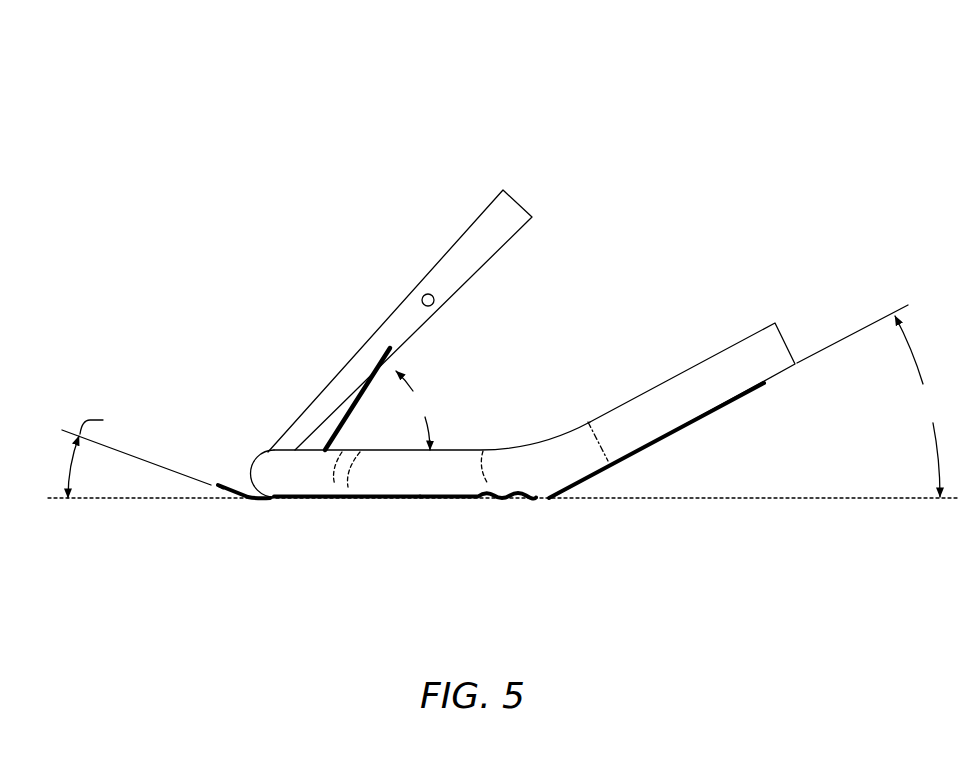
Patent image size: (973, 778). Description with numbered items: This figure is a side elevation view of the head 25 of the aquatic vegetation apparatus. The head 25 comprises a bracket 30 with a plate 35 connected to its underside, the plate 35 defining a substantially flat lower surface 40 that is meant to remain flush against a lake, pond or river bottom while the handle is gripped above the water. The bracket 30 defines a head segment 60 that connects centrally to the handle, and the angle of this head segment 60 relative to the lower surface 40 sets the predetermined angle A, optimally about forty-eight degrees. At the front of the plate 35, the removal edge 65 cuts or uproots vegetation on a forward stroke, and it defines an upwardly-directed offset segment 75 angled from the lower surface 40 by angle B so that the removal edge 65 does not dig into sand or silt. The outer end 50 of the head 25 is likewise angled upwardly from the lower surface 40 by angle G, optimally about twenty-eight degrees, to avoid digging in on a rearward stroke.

The head 25 is at (257, 177).
The bracket 30 is at (420, 473).
The plate 35 is at (445, 498).
The lower surface 40 is at (322, 498).
The outer end 50 is at (712, 297).
The head segment 60 is at (480, 223).
The removal edge 65 is at (220, 483).
The offset segment 75 is at (225, 498).